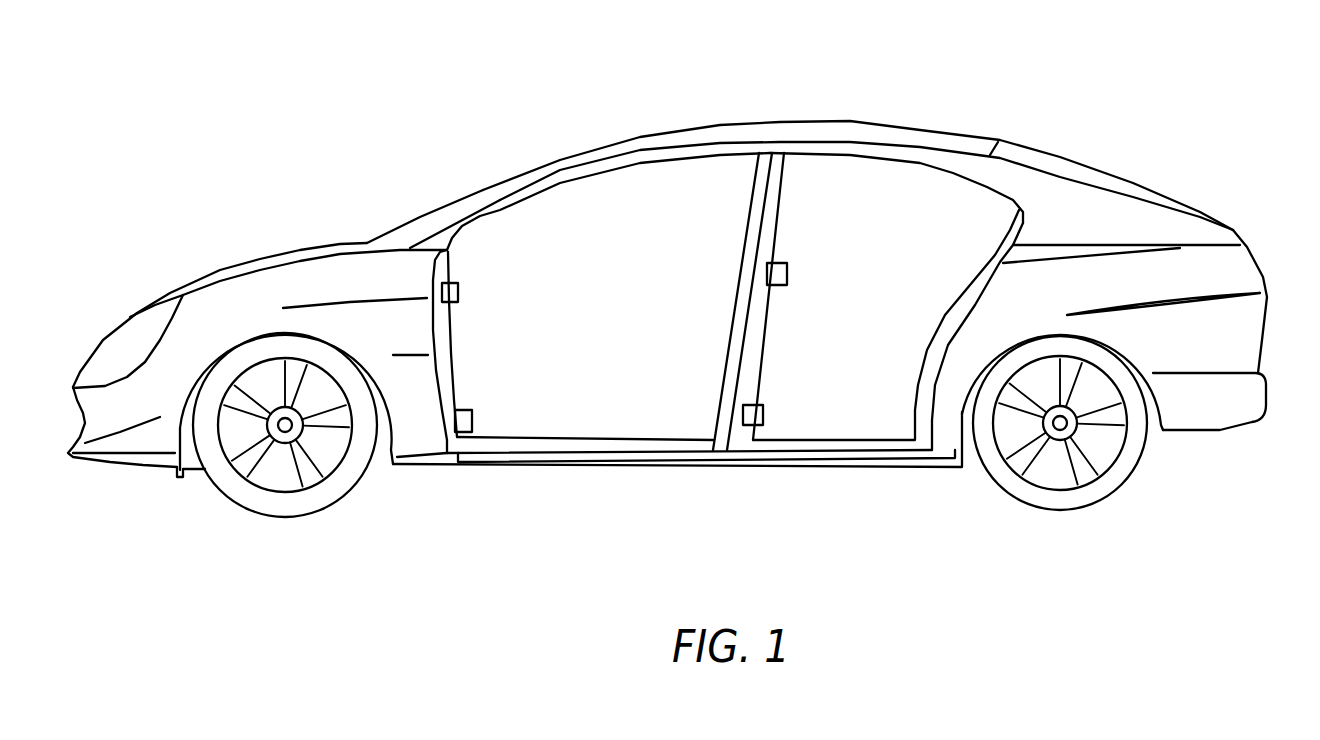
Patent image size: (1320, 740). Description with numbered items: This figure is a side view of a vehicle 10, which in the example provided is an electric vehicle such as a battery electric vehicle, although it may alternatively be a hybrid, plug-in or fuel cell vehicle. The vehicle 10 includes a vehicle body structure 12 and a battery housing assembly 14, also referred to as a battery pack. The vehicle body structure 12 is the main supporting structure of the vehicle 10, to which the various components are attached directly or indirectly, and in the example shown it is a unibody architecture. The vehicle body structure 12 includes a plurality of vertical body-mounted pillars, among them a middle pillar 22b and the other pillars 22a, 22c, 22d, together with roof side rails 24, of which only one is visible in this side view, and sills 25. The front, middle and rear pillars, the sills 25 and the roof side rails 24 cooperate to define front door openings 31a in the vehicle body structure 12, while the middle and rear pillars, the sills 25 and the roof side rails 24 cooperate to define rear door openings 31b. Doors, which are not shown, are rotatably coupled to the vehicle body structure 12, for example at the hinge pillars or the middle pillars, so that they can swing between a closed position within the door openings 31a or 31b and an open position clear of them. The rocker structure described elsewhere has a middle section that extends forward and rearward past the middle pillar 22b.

The vehicle 10 is at (487, 100).
The vehicle body structure 12 is at (280, 252).
The battery housing assembly 14 is at (730, 470).
The A-pillar 22a is at (465, 203).
The middle pillar 22b is at (740, 311).
The C-pillar 22c is at (1072, 190).
The hinge pillar 22d is at (440, 340).
The roof side rails 24 is at (883, 140).
The sills 25 is at (556, 447).
The front door openings 31a is at (523, 418).
The rear door openings 31b is at (860, 393).